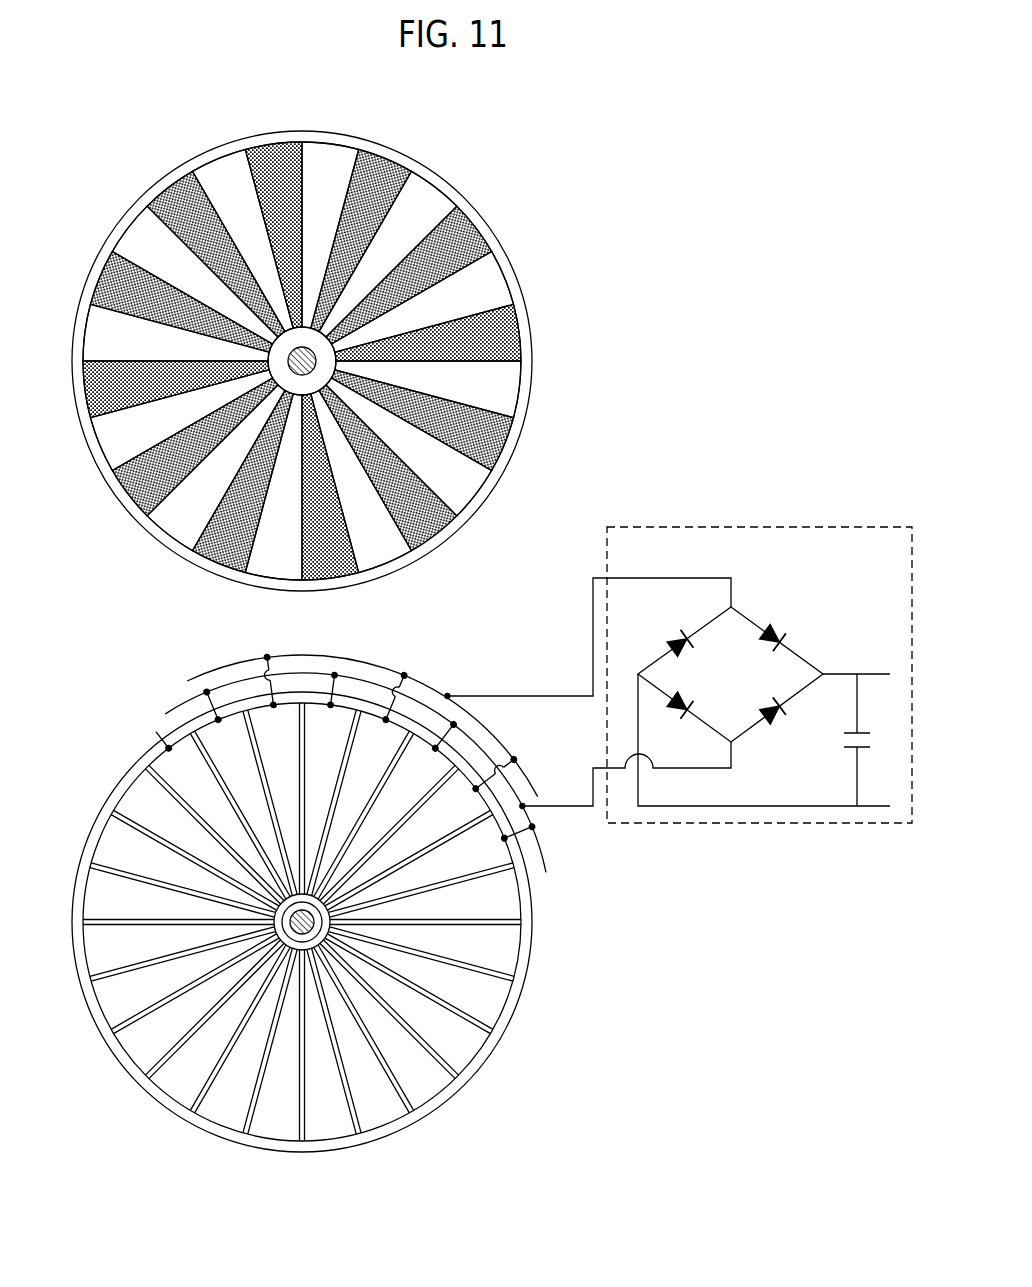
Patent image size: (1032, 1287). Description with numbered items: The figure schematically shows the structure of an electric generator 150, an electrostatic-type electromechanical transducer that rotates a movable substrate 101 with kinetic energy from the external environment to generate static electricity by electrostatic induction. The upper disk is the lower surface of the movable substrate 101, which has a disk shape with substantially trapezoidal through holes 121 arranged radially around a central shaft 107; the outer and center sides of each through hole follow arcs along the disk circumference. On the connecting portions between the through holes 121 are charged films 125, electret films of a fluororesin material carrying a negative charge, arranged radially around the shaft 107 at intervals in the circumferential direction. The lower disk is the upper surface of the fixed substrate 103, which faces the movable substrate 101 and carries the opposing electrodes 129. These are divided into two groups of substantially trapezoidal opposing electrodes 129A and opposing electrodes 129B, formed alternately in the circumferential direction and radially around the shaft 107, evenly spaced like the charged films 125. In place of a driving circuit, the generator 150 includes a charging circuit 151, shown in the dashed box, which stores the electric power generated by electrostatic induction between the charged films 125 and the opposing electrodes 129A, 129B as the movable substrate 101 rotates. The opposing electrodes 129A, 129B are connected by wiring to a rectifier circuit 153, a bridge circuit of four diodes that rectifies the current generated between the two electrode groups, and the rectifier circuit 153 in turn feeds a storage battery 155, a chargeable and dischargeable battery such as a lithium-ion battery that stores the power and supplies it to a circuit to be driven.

The movable substrate 101 is at (274, 132).
The fixed substrate 103 is at (75, 973).
The shaft 107 is at (318, 345).
The through holes 121 is at (470, 487).
The charged films 125 is at (173, 198).
The opposing electrodes 129 is at (370, 897).
The opposing electrodes 129A is at (108, 847).
The opposing electrodes 129B is at (492, 861).
The electric generator 150 is at (799, 160).
The charging circuit 151 is at (860, 527).
The rectifier circuit 153 is at (815, 612).
The storage battery 155 is at (868, 732).